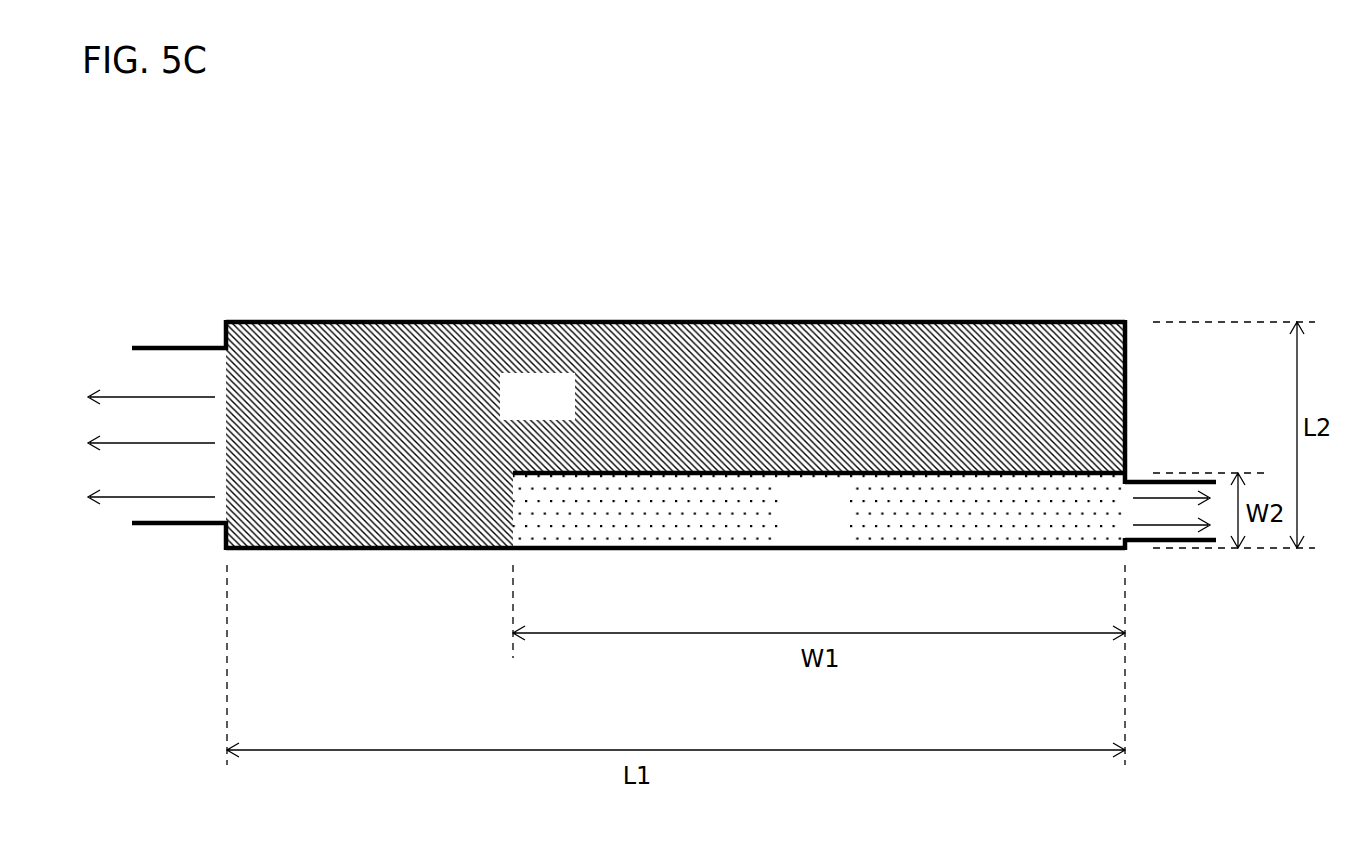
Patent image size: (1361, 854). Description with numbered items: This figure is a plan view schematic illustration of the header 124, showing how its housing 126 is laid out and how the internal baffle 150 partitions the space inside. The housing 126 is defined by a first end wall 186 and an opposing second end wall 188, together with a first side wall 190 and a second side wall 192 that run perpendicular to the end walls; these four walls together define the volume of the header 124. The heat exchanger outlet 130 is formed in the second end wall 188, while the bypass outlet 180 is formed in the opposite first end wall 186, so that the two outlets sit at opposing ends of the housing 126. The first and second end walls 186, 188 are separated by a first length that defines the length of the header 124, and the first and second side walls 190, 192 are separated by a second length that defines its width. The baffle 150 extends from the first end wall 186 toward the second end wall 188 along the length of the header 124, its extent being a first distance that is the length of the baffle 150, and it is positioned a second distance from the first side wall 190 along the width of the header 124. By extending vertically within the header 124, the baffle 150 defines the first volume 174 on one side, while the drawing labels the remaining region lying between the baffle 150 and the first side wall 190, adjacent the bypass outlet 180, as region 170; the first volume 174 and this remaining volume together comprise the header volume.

The header 124 is at (682, 416).
The housing 126 is at (548, 322).
The heat exchanger outlet 130 is at (183, 348).
The baffle 150 is at (665, 475).
The second flow channel 170 is at (819, 510).
The first volume 174 is at (675, 435).
The bypass outlet 180 is at (1165, 543).
The first end wall 186 is at (1127, 433).
The second end wall 188 is at (225, 532).
The first side wall 190 is at (412, 550).
The second side wall 192 is at (892, 322).